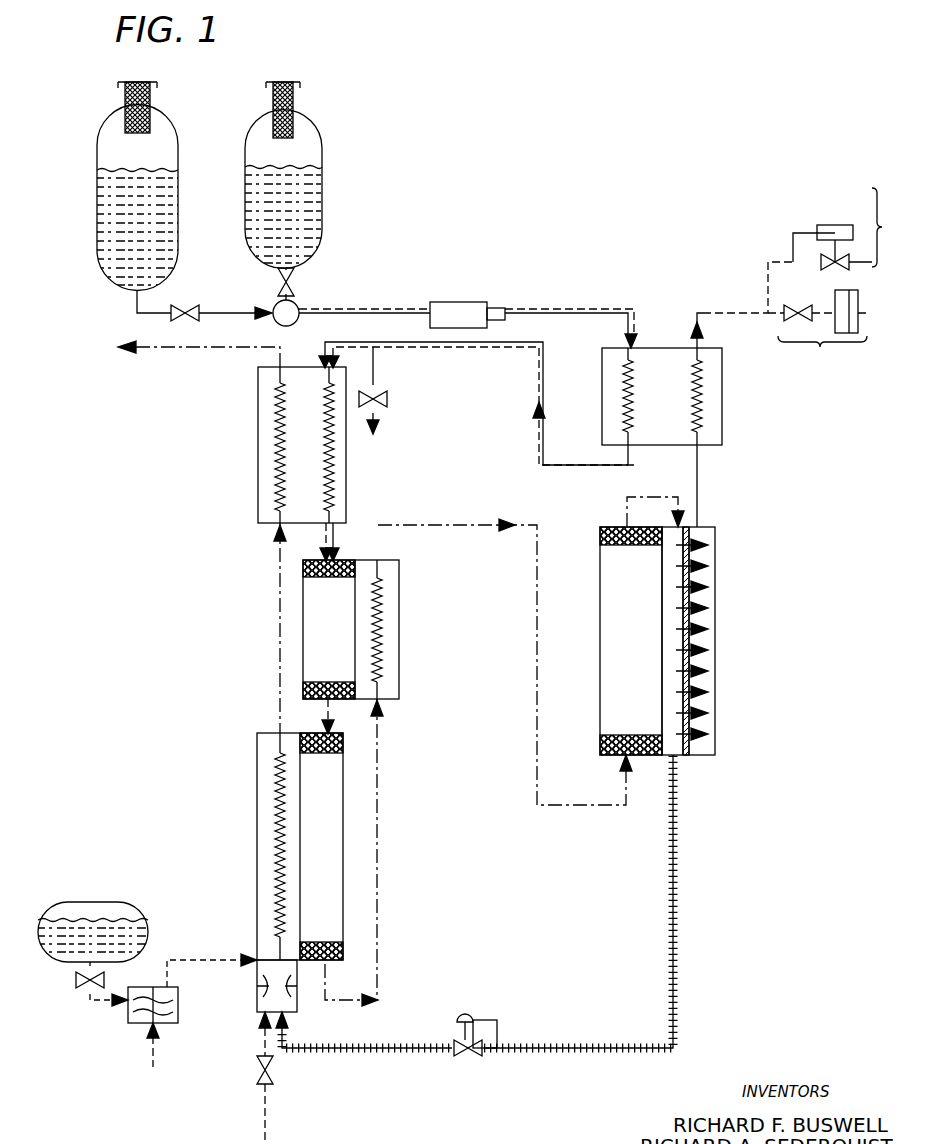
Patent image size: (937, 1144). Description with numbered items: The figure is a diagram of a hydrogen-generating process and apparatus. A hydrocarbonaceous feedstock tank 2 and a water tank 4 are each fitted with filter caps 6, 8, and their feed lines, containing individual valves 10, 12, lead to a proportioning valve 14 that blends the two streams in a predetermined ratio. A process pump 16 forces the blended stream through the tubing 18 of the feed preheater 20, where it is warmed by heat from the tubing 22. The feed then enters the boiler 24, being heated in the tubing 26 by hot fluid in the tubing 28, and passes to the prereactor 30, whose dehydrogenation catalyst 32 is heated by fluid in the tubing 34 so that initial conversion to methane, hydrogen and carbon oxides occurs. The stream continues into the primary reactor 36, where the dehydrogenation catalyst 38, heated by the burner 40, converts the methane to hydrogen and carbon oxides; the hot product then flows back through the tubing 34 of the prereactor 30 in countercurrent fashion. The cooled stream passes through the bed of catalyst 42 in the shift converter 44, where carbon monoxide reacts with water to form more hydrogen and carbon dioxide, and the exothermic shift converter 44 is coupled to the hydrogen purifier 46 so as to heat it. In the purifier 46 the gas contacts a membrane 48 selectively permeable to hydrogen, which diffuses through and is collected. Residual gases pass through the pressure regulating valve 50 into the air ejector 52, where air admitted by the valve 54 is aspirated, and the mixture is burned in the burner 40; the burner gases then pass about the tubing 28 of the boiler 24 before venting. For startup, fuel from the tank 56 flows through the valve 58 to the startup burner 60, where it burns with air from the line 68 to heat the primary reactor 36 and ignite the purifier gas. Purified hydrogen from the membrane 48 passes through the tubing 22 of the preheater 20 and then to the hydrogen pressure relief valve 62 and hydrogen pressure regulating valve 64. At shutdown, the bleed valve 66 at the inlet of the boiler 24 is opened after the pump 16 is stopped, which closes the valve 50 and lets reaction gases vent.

The hydrocarbonaceous feedstock tank 2 is at (178, 197).
The water tank 4 is at (322, 195).
The filter cap 6 is at (150, 95).
The filter cap 8 is at (293, 100).
The valve 10 is at (193, 306).
The valve 12 is at (296, 280).
The proportioning valve 14 is at (296, 322).
The process pump 16 is at (470, 302).
The tubing 18 is at (622, 360).
The feed preheater 20 is at (722, 440).
The tubing 22 is at (702, 410).
The boiler 24 is at (347, 500).
The tubing 26 is at (333, 472).
The tubing 28 is at (277, 435).
The prereactor 30 is at (400, 580).
The dehydrogenation catalyst 32 is at (303, 572).
The tubing 34 is at (380, 633).
The primary reactor 36 is at (343, 795).
The dehydrogenation catalyst 38 is at (330, 740).
The burner 40 is at (280, 800).
The bed of catalyst 42 is at (617, 532).
The shift converter 44 is at (600, 660).
The hydrogen purifier 46 is at (715, 648).
The membrane 48 is at (690, 690).
The pressure regulating valve 50 is at (480, 1020).
The air ejector 52 is at (297, 1008).
The valve 54 is at (274, 1078).
The tank 56 is at (145, 920).
The valve 58 is at (82, 986).
The startup burner 60 is at (178, 1010).
The hydrogen pressure relief valve 62 is at (837, 216).
The hydrogen pressure regulating valve 64 is at (822, 350).
The bleed valve 66 is at (380, 395).
The line 68 is at (158, 1060).